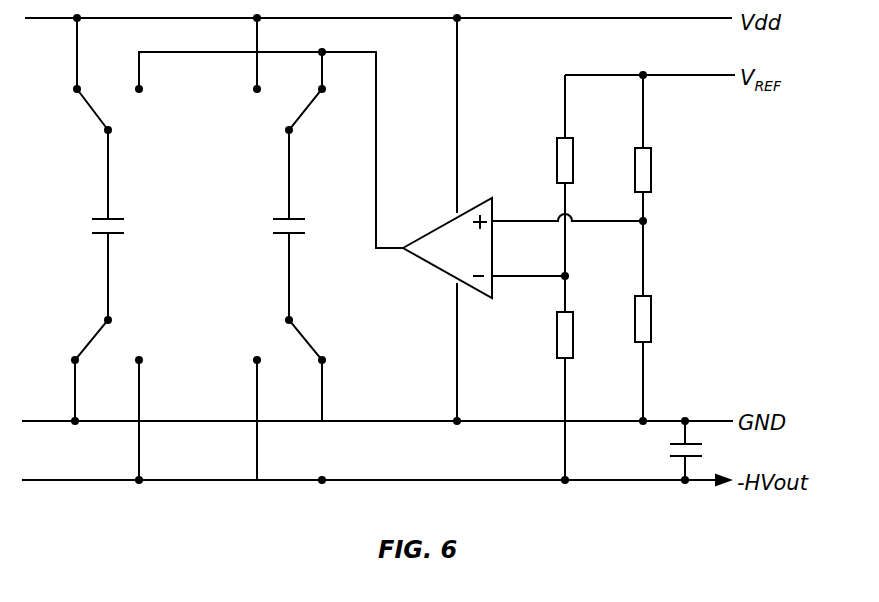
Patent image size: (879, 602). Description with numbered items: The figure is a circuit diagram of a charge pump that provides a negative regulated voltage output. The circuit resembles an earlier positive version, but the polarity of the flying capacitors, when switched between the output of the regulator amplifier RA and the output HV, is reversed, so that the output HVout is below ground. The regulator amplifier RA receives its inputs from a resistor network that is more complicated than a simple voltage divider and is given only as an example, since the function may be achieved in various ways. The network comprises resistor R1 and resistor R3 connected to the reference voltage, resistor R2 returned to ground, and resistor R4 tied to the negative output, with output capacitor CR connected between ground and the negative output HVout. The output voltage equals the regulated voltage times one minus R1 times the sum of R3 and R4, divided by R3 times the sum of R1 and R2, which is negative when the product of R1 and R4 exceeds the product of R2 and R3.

The regulator amplifier RA is at (447, 248).
The resistor R1 is at (661, 170).
The resistor R2 is at (661, 319).
The resistor R3 is at (583, 160).
The resistor R4 is at (583, 335).
The reservoir capacitor CR is at (702, 454).